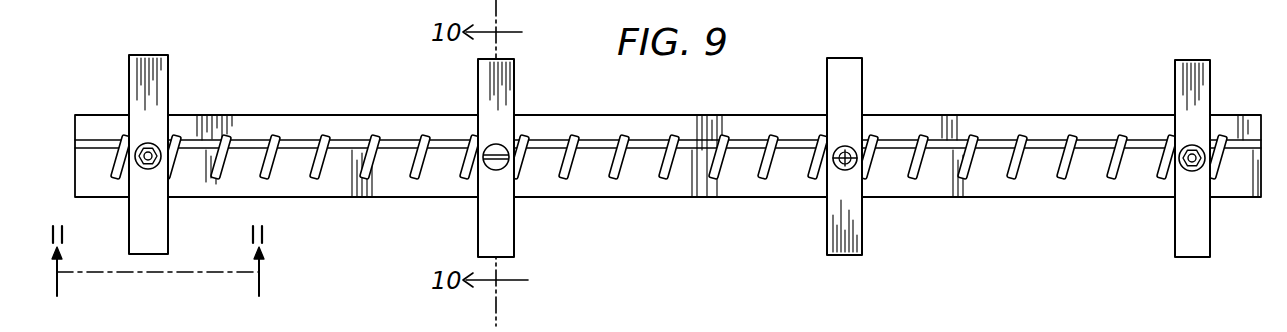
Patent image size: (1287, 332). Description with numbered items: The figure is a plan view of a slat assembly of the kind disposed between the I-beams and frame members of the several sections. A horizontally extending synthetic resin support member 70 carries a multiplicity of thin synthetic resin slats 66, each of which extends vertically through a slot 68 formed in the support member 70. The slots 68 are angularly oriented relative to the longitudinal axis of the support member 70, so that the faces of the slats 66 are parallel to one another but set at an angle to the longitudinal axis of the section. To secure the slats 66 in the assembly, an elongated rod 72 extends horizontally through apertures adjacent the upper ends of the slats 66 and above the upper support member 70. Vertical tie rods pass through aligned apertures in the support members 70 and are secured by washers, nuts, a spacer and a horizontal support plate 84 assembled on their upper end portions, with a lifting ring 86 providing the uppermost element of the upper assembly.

The slat 66 is at (971, 160).
The slot 68 is at (1061, 157).
The support member 70 is at (940, 115).
The rod 72 is at (1147, 147).
The horizontal support plate 84 is at (853, 90).
The lifting ring 86 is at (851, 167).